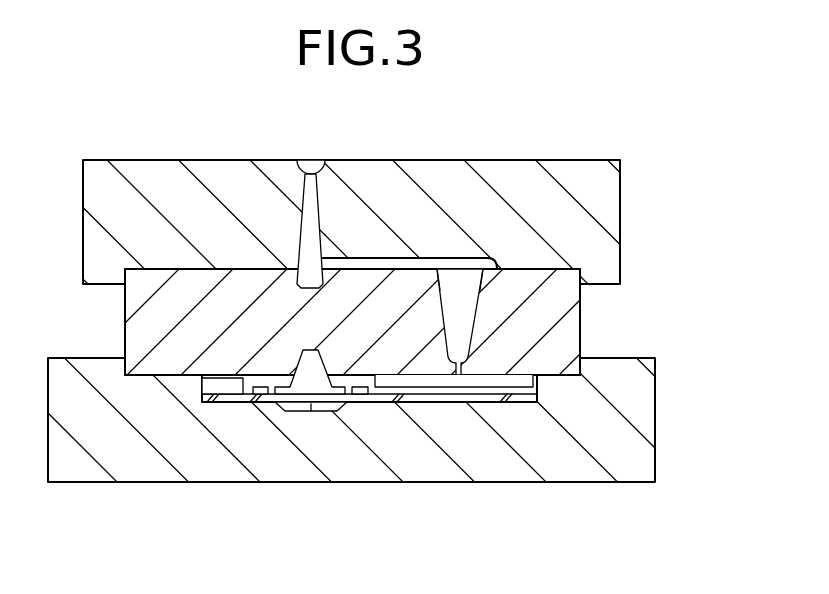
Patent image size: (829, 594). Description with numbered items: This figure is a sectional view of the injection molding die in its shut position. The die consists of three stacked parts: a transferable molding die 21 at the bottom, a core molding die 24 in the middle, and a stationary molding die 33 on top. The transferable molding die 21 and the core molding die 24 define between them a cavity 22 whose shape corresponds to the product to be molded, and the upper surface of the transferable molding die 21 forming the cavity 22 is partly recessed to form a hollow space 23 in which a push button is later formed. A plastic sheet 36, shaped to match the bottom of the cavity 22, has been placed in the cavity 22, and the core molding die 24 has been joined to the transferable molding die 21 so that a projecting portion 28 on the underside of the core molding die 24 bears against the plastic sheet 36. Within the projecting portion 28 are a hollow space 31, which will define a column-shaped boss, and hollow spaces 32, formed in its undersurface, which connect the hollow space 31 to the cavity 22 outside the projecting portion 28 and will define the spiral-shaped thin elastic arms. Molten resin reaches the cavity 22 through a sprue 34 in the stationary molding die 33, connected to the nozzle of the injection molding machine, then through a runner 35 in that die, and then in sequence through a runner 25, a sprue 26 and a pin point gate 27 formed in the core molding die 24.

The transferable molding die 21 is at (576, 478).
The cavity 22 is at (200, 387).
The hollow space 23 is at (308, 411).
The core molding die 24 is at (598, 322).
The runner 25 is at (295, 285).
The sprue 26 is at (441, 289).
The pin point gate 27 is at (467, 373).
The projecting portion 28 is at (383, 403).
The hollow space 31 is at (306, 349).
The hollow spaces 32 is at (259, 386).
The stationary molding die 33 is at (636, 240).
The sprue 34 is at (311, 217).
The runner 35 is at (450, 260).
The plastic sheet 36 is at (495, 404).